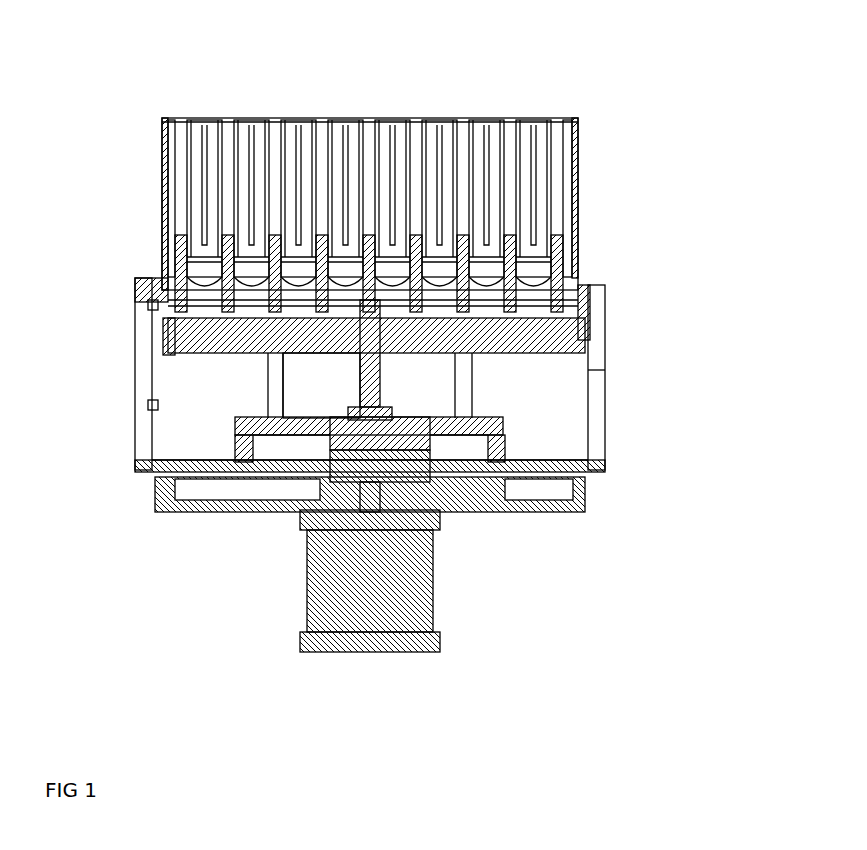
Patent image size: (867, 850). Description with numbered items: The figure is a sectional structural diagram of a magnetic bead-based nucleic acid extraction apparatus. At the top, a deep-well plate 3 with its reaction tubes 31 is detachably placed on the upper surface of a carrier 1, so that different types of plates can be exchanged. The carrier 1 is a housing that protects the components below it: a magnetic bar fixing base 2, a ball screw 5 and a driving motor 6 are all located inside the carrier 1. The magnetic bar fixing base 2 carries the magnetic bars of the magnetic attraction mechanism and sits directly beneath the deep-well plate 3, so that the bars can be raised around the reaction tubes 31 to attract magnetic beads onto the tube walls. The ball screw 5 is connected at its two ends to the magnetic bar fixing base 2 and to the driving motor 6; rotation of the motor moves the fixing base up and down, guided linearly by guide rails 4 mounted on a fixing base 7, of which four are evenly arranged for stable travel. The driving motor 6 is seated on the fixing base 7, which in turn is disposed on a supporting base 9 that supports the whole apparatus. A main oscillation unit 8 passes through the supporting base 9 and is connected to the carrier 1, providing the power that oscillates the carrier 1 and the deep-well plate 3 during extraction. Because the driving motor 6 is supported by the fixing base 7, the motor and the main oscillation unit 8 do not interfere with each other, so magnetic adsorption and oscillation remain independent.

The carrier 1 is at (153, 272).
The magnetic bar fixing base 2 is at (563, 318).
The deep-well plate 3 is at (160, 138).
The reaction tube 31 is at (265, 142).
The guide rail 4 is at (282, 388).
The ball screw 5 is at (382, 345).
The driving motor 6 is at (422, 441).
The fixing base 7 is at (499, 440).
The main oscillation unit 8 is at (434, 580).
The supporting base 9 is at (272, 503).